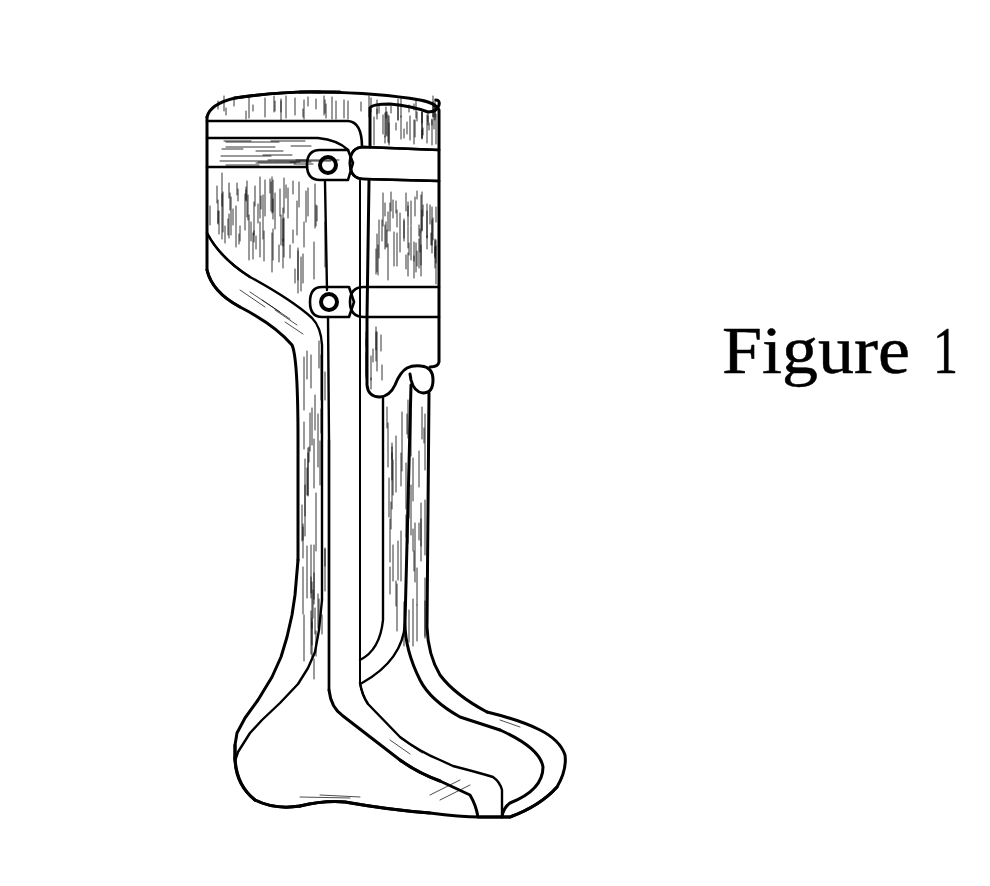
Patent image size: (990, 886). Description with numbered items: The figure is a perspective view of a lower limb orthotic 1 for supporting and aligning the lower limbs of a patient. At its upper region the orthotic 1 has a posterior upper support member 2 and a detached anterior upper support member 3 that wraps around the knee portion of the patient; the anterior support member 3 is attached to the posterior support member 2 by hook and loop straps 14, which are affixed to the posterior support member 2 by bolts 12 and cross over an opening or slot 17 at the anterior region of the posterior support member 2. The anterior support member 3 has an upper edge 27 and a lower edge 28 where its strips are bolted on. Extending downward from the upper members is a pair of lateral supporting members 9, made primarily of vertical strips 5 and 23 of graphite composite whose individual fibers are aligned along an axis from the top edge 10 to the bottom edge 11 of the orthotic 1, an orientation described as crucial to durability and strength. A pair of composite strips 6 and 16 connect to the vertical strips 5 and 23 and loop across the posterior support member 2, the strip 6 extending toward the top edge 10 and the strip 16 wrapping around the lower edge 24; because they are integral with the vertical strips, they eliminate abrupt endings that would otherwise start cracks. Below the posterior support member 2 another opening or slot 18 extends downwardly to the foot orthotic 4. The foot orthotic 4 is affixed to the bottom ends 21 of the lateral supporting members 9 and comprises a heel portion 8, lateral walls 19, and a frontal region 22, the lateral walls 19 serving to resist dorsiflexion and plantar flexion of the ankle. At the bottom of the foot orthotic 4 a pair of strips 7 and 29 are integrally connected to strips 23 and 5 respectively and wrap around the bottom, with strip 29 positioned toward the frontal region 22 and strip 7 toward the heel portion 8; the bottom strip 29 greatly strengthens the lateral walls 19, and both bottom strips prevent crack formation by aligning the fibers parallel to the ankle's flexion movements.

The lower limb orthotic 1 is at (490, 610).
The posterior upper support member 2 is at (260, 197).
The anterior upper support member 3 is at (442, 133).
The foot orthotic 4 is at (437, 737).
The vertical strip 5 is at (410, 465).
The strip of composite material 6 is at (207, 133).
The bottom strip 7 is at (233, 722).
The heel portion 8 is at (250, 810).
The lateral supporting member 9 is at (290, 563).
The top edge 10 is at (238, 90).
The bottom edge 11 is at (347, 813).
The bolt 12 is at (310, 180).
The strap 14 is at (442, 163).
The strip of composite material 16 is at (207, 247).
The opening or slot 17 is at (320, 92).
The opening or slot 18 is at (345, 470).
The lateral wall 19 is at (410, 812).
The bottom end 21 is at (323, 650).
The frontal region 22 is at (557, 800).
The vertical strip 23 is at (380, 420).
The lower edge 24 is at (213, 297).
The upper edge 27 is at (450, 98).
The lower edge 28 is at (445, 360).
The bottom strip 29 is at (577, 767).